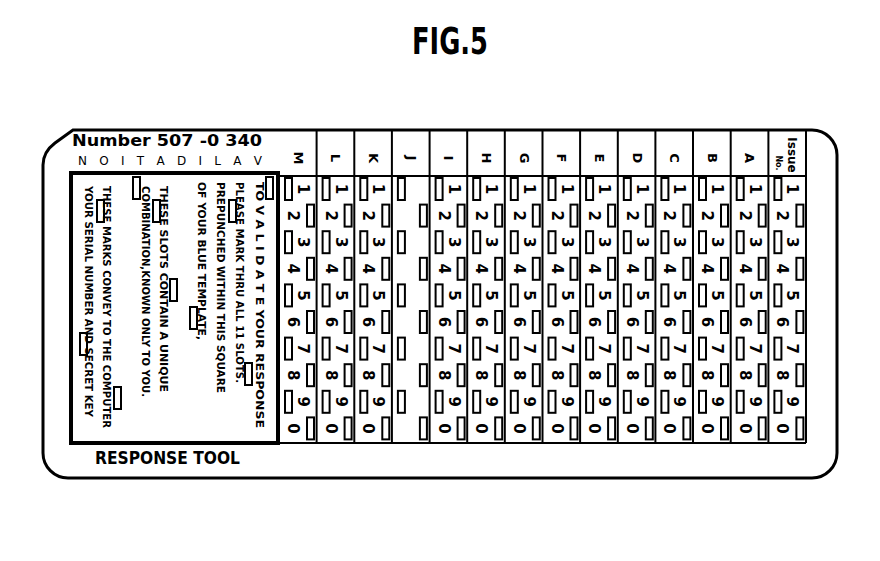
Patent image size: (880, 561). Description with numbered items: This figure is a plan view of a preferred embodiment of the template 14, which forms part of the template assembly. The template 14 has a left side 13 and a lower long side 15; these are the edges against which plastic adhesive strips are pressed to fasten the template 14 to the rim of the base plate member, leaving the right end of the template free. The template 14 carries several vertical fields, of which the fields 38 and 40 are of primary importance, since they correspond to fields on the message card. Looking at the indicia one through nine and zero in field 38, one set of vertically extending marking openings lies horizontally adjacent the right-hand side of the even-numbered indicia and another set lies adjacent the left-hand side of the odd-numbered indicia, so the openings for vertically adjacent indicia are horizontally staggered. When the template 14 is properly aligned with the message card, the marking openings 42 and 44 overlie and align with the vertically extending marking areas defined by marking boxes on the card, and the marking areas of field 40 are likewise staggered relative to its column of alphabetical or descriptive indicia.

The left side of the template 13 is at (44, 377).
The template 14 is at (518, 128).
The lower long side of the template 15 is at (667, 480).
The field 38 is at (450, 128).
The field 40 is at (405, 128).
The marking opening 42 is at (458, 420).
The marking opening 44 is at (437, 414).